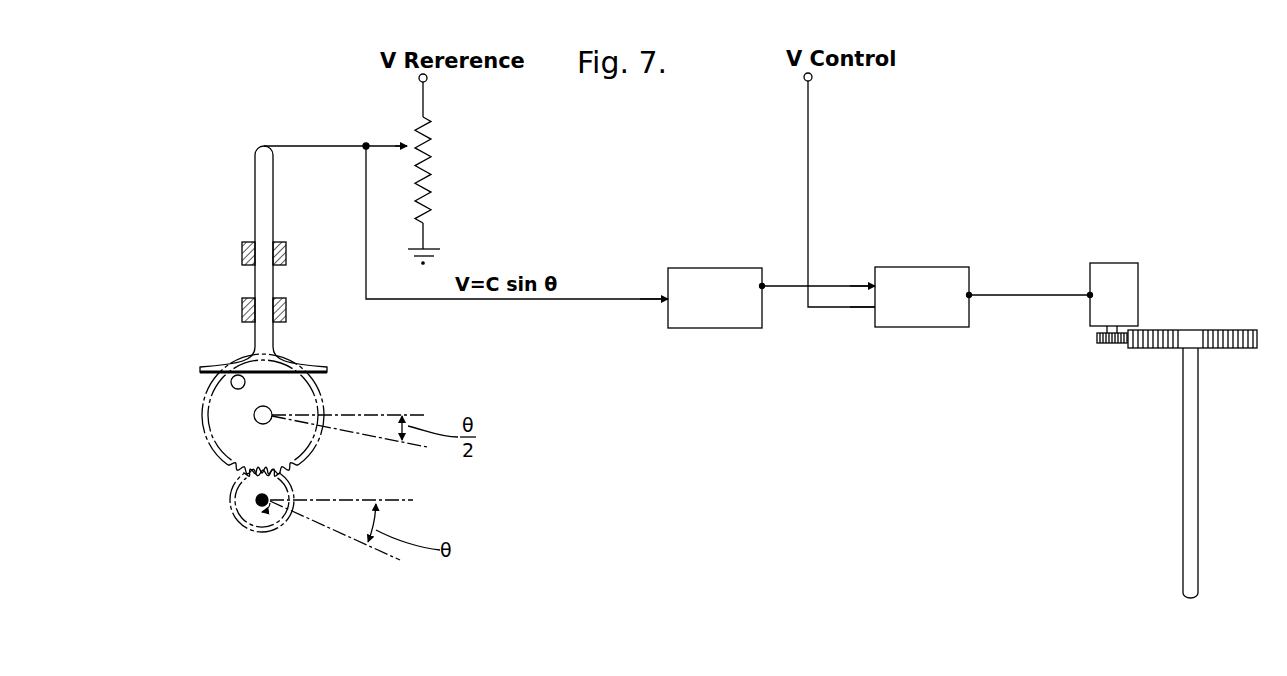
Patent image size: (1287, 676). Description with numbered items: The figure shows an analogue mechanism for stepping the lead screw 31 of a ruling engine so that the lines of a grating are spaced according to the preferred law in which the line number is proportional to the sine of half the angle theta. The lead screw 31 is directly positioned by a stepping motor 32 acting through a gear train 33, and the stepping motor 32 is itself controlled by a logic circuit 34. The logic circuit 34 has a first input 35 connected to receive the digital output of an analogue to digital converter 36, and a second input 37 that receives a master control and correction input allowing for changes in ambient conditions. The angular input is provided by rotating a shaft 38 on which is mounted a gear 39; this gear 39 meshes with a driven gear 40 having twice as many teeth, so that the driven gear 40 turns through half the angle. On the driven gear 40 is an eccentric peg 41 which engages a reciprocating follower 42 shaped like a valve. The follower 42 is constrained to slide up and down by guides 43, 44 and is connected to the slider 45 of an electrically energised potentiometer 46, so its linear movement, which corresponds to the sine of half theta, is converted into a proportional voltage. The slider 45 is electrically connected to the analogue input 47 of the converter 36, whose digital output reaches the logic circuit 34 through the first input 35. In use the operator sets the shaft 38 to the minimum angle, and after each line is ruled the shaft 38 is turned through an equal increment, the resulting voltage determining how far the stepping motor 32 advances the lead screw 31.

The lead screw 31 is at (1199, 410).
The stepping motor 32 is at (1140, 275).
The gear train 33 is at (1146, 345).
The logic circuit 34 is at (942, 267).
The first input 35 is at (872, 284).
The analogue to digital converter 36 is at (685, 268).
The second input 37 is at (873, 309).
The shaft 38 is at (258, 506).
The gear 39 is at (247, 500).
The driven gear 40 is at (223, 420).
The eccentric peg 41 is at (231, 382).
The reciprocating follower 42 is at (310, 367).
The guide 43 is at (242, 250).
The guide 44 is at (242, 311).
The slider 45 is at (392, 146).
The potentiometer 46 is at (425, 190).
The analogue input 47 is at (667, 300).